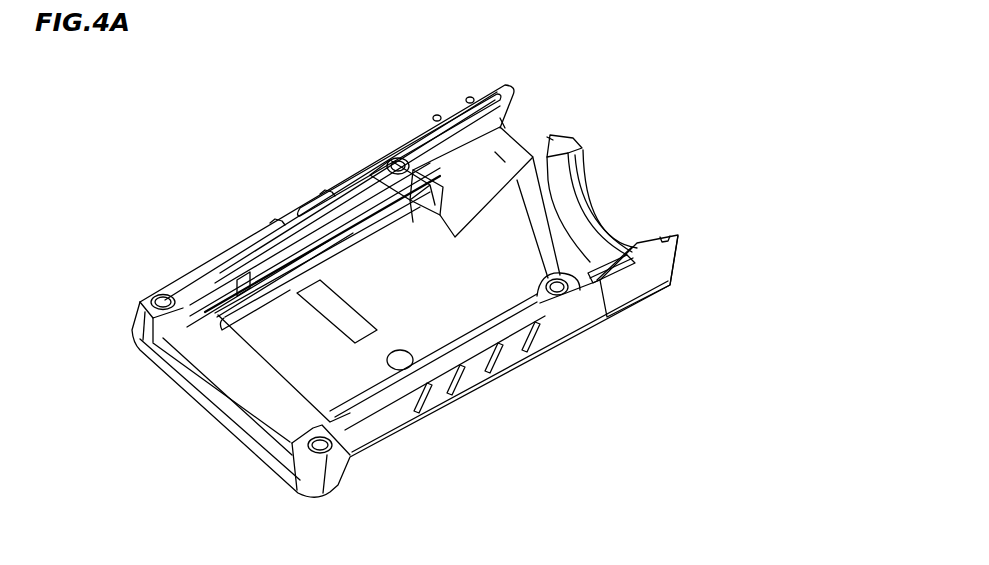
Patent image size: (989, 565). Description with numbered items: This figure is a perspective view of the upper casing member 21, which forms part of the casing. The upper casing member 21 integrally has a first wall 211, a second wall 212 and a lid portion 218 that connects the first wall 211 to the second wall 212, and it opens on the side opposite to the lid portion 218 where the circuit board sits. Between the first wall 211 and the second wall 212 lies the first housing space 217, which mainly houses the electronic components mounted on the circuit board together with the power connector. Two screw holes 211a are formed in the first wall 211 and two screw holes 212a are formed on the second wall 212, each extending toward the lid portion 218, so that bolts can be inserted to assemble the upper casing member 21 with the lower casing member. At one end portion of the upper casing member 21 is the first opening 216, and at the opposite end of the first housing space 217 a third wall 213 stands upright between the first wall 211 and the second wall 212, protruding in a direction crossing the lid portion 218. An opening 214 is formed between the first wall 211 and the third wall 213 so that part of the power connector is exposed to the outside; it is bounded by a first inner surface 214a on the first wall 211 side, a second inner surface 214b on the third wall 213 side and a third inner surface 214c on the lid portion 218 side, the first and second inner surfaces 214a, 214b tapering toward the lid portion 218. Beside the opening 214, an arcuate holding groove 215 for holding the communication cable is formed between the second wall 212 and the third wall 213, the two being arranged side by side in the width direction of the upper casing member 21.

The upper casing member 21 is at (343, 183).
The first wall 211 is at (495, 82).
The screw hole 211a is at (398, 158).
The second wall 212 is at (645, 247).
The screw hole 212a is at (568, 295).
The third wall 213 is at (572, 146).
The opening 214 is at (532, 153).
The first inner surface 214a is at (500, 125).
The second inner surface 214b is at (552, 138).
The third inner surface 214c is at (508, 150).
The holding groove 215 is at (590, 213).
The first opening 216 is at (220, 392).
The first housing space 217 is at (438, 323).
The lid portion 218 is at (245, 450).